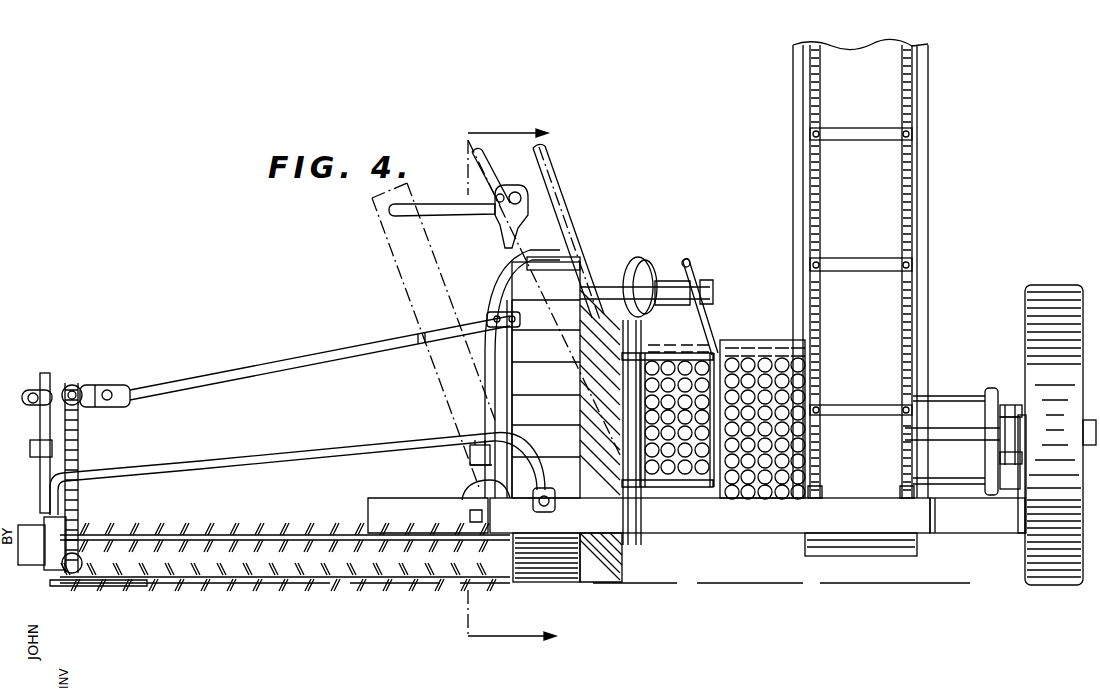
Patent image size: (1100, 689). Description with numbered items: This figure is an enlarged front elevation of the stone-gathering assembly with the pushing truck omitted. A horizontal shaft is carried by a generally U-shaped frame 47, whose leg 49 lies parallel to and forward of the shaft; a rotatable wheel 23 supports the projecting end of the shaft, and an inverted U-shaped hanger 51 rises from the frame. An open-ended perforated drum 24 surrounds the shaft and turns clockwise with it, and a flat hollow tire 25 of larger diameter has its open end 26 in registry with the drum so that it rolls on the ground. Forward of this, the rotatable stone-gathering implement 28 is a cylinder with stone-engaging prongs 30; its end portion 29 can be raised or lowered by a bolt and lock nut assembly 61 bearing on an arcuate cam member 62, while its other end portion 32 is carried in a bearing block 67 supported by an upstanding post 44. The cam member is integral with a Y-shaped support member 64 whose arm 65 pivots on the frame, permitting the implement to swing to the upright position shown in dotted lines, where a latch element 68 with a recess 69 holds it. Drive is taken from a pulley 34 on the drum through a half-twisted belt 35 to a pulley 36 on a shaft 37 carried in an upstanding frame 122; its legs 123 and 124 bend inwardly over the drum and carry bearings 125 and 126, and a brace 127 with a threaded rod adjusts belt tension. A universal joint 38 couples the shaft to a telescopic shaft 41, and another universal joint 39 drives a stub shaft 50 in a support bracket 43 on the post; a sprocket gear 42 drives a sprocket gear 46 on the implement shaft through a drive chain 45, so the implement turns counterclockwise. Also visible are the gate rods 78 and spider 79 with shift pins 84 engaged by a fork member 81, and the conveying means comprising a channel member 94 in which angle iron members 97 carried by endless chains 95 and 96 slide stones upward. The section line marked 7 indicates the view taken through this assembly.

The section line 7- 7 is at (512, 397).
The rotatable wheel 23 is at (1031, 584).
The perforated drum 24 is at (758, 492).
The flat hollow open-ended tire 25 is at (578, 583).
The open end of tire 26 is at (645, 350).
The stone-gathering implement 28 is at (283, 533).
The end portion of implement cylinder 29 is at (490, 581).
The stone-engaging prongs 30 is at (262, 586).
The end portion of implement cylinder 32 is at (92, 581).
The pulley 34 is at (645, 541).
The belt 35 is at (620, 548).
The pulley 36 is at (636, 260).
The shaft 37 is at (621, 281).
The universal joint 38 is at (487, 315).
The universal joint 39 is at (100, 387).
The telescopic shaft 41 is at (236, 367).
The sprocket gear 42 is at (70, 385).
The support bracket 43 is at (28, 391).
The upstanding post 44 is at (50, 372).
The drive chain 45 is at (80, 494).
The sprocket gear 46 is at (58, 578).
The U-shaped frame 47 is at (992, 540).
The leg of frame 49 is at (748, 510).
The stub shaft 50 is at (78, 405).
The inverted U-shaped hanger 51 is at (492, 276).
The bolt and lock nut assembly 61 is at (468, 465).
The cam member 62 is at (462, 492).
The Y-shaped support member 64 is at (93, 460).
The arm of support member 65 is at (375, 446).
The bearing block 67 is at (28, 525).
The latch element 68 is at (450, 216).
The recess 69 is at (506, 193).
The rods 78 is at (948, 396).
The spider 79 is at (990, 390).
The fork member 81 is at (1010, 405).
The shift pins 84 is at (1008, 467).
The channel member 94 is at (929, 170).
The endless chain 95 is at (913, 212).
The endless chain 96 is at (810, 220).
The angle iron members 97 is at (866, 141).
The upstanding frame 122 is at (742, 366).
The leg of upstanding frame 123 is at (713, 310).
The leg of upstanding frame 124 is at (544, 319).
The bearing 125 is at (705, 268).
The bearing 126 is at (576, 258).
The brace 127 is at (560, 232).